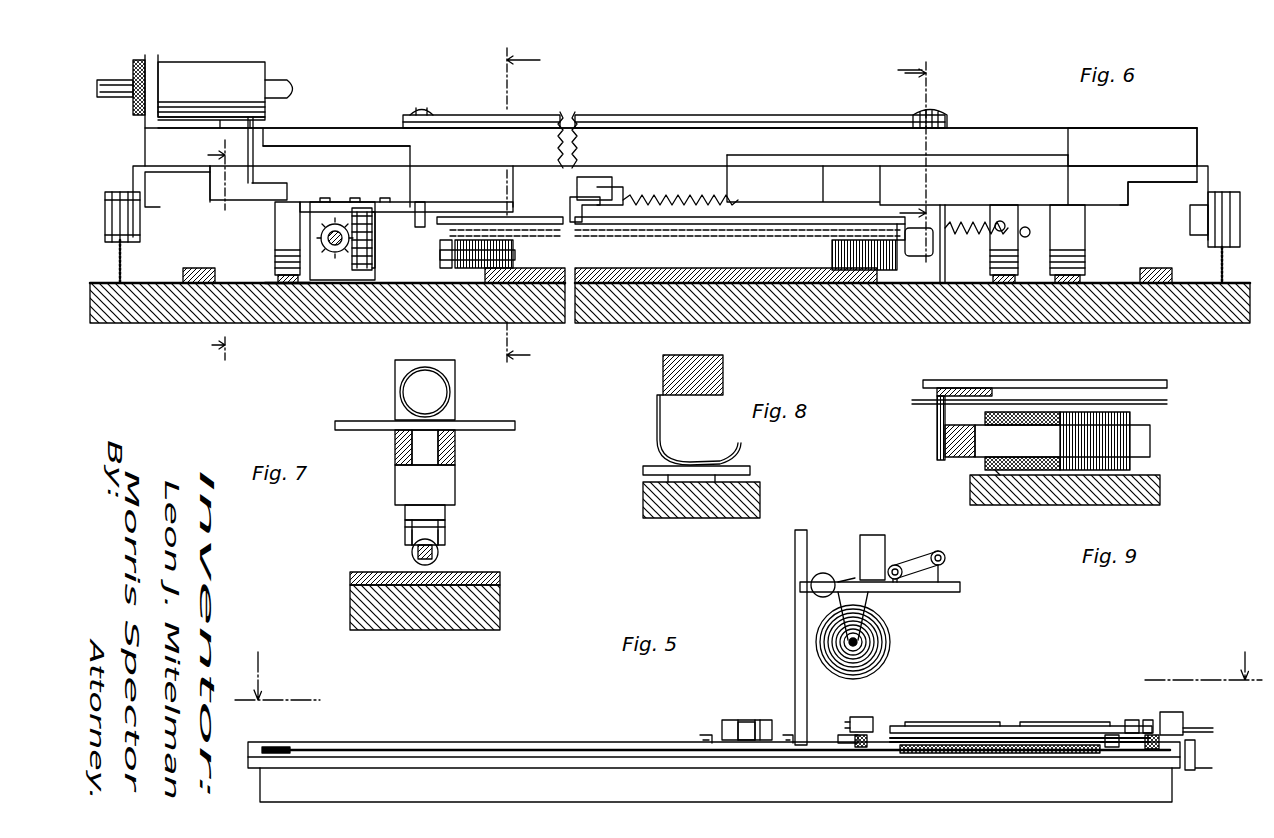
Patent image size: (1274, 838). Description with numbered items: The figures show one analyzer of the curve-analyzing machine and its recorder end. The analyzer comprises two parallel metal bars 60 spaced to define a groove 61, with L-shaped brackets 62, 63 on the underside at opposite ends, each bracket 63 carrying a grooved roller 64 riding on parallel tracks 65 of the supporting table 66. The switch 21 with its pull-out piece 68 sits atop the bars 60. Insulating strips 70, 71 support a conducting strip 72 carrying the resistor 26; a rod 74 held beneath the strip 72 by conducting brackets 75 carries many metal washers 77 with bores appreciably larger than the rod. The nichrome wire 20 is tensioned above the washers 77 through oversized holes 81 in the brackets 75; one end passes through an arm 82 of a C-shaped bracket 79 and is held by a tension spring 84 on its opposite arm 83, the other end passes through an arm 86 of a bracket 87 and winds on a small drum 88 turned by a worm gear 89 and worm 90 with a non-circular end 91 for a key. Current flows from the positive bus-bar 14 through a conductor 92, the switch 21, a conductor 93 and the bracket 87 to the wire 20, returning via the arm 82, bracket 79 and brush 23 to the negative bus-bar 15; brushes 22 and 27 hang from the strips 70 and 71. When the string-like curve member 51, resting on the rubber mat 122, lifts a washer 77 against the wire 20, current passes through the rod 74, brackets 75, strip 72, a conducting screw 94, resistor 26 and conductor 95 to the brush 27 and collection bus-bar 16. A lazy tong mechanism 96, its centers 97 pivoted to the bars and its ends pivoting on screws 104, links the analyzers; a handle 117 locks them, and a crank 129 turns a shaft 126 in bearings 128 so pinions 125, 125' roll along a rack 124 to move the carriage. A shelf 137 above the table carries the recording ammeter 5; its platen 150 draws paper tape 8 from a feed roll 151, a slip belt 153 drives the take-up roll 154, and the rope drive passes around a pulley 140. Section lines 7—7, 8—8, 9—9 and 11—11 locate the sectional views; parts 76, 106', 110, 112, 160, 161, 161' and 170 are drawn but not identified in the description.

In FIG. 5, the recording ammeter 5 is at (878, 535).
In FIG. 6, the section line 7— 7 is at (523, 212).
In FIG. 6, the section line 8— 8 is at (213, 253).
In FIG. 5, the section line 9- 9 is at (748, 671).
In FIG. 6, the section line 11- 11 is at (914, 155).
In FIG. 6, the positive bus-bar 14 is at (290, 285).
In FIG. 8, the positive bus-bar 14 is at (645, 465).
In FIG. 6, the negative bus-bar 15 is at (1000, 285).
In FIG. 6, the collection bus-bar 16 is at (1065, 285).
In FIG. 6, the resistance wire 20 is at (752, 238).
In FIG. 7, the resistance wire 20 is at (405, 534).
In FIG. 9, the resistance wire 20 is at (1170, 403).
In FIG. 6, the switch 21 is at (215, 64).
In FIG. 7, the switch 21 is at (450, 390).
In FIG. 5, the switch 21 is at (873, 720).
In FIG. 6, the brush 22 is at (275, 238).
In FIG. 8, the brush 22 is at (657, 431).
In FIG. 6, the brush 23 is at (990, 245).
In FIG. 6, the resistor 26 is at (680, 198).
In FIG. 6, the brush 27 is at (1085, 245).
In FIG. 9, the string-like member 51 is at (998, 472).
In FIG. 6, the metal bars 60 is at (1118, 113).
In FIG. 7, the metal bars 60 is at (395, 446).
In FIG. 7, the groove 61 is at (438, 456).
In FIG. 6, the bracket 62 is at (1210, 172).
In FIG. 6, the bracket 63 is at (148, 185).
In FIG. 6, the grooved roller 64 is at (140, 230).
In FIG. 6, the tracks 65 is at (125, 265).
In FIG. 6, the supporting table 66 is at (1205, 318).
In FIG. 7, the supporting table 66 is at (500, 613).
In FIG. 8, the supporting table 66 is at (650, 518).
In FIG. 5, the supporting table 66 is at (690, 790).
In FIG. 6, the pull-out piece 68 is at (115, 75).
In FIG. 6, the insulating strip 70 is at (220, 200).
In FIG. 7, the insulating strip 70 is at (455, 486).
In FIG. 8, the insulating strip 70 is at (663, 386).
In FIG. 6, the insulating strip 71 is at (1128, 200).
In FIG. 6, the conducting strip 72 is at (525, 217).
In FIG. 7, the conducting strip 72 is at (405, 516).
In FIG. 9, the conducting strip 72 is at (1062, 371).
In FIG. 6, the rod 74 is at (515, 270).
In FIG. 7, the rod 74 is at (412, 554).
In FIG. 9, the rod 74 is at (1150, 446).
In FIG. 6, the conducting brackets 75 is at (440, 250).
In FIG. 7, the conducting brackets 75 is at (445, 538).
In FIG. 9, the conducting brackets 75 is at (945, 453).
In FIG. 6, the stop 76 is at (920, 248).
In FIG. 6, the metal washers 77 is at (470, 268).
In FIG. 7, the metal washers 77 is at (440, 553).
In FIG. 9, the metal washers 77 is at (1090, 412).
In FIG. 6, the conducting bracket 79 is at (965, 222).
In FIG. 7, the oversized holes 81 is at (445, 528).
In FIG. 9, the oversized holes 81 is at (937, 419).
In FIG. 6, the arm 82 is at (950, 242).
In FIG. 6, the arm 83 is at (1028, 226).
In FIG. 6, the tension spring 84 is at (1000, 220).
In FIG. 6, the arm 86 is at (420, 215).
In FIG. 6, the bracket 87 is at (415, 207).
In FIG. 6, the drum 88 is at (332, 255).
In FIG. 6, the worm gear 89 is at (350, 272).
In FIG. 6, the worm 90 is at (373, 272).
In FIG. 6, the non-circular end 91 is at (360, 272).
In FIG. 6, the conductor 92 is at (250, 158).
In FIG. 6, the conductor 93 is at (345, 128).
In FIG. 6, the conducting screw 94 is at (570, 207).
In FIG. 6, the conductor 95 is at (820, 155).
In FIG. 6, the lazy tong mechanism 96 is at (640, 96).
In FIG. 5, the lazy tong mechanism 96 is at (1060, 726).
In FIG. 5, the centers 97 is at (1015, 702).
In FIG. 6, the screw 104 is at (438, 108).
In FIG. 5, the drive 106' is at (847, 717).
In FIG. 5, the block 110 is at (1130, 720).
In FIG. 5, the block 112 is at (1148, 720).
In FIG. 5, the handle 117 is at (1195, 728).
In FIG. 6, the rubber mat 122 is at (600, 285).
In FIG. 7, the rubber mat 122 is at (500, 579).
In FIG. 9, the rubber mat 122 is at (1160, 491).
In FIG. 6, the rack 124 is at (200, 285).
In FIG. 6, the spur gear 125 is at (1148, 312).
In FIG. 5, the spur gear 125 is at (842, 764).
In FIG. 5, the spur gear 125' is at (1137, 764).
In FIG. 5, the shaft 126 is at (925, 748).
In FIG. 5, the bearings 128 is at (1110, 748).
In FIG. 5, the crank 129 is at (1198, 752).
In FIG. 5, the shelf 137 is at (945, 592).
In FIG. 5, the pulley 140 is at (800, 570).
In FIG. 5, the platen 150 is at (898, 565).
In FIG. 5, the feed roll 151 is at (892, 645).
In FIG. 5, the slip drive belt 153 is at (925, 571).
In FIG. 5, the take-up roll 154 is at (945, 559).
In FIG. 5, the block 160 is at (722, 720).
In FIG. 5, the clip 161 is at (772, 700).
In FIG. 5, the clip 161' is at (683, 721).
In FIG. 5, the block 170 is at (748, 720).